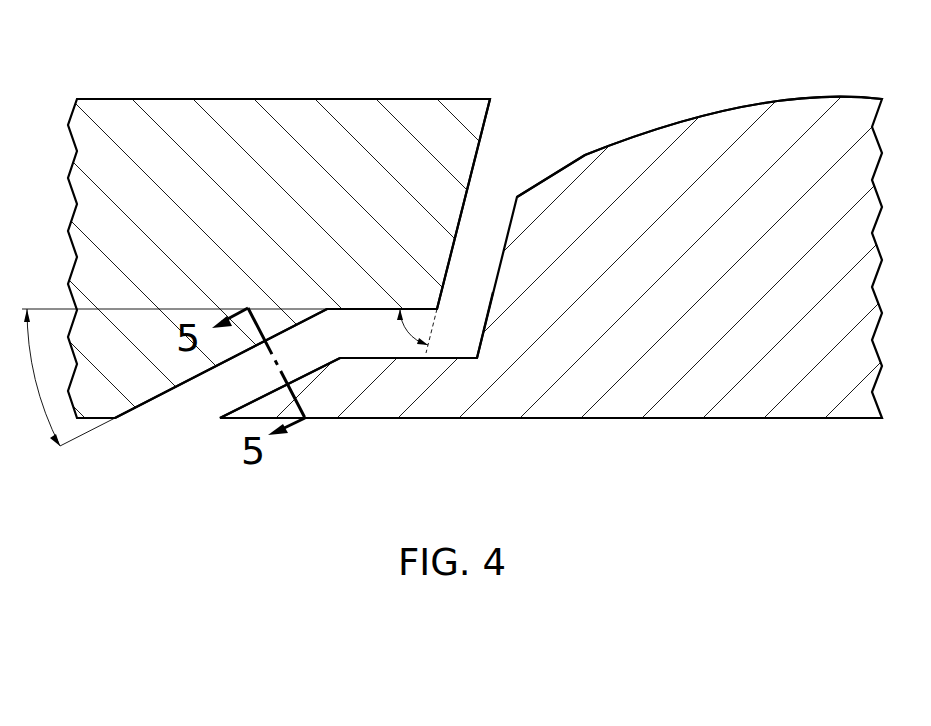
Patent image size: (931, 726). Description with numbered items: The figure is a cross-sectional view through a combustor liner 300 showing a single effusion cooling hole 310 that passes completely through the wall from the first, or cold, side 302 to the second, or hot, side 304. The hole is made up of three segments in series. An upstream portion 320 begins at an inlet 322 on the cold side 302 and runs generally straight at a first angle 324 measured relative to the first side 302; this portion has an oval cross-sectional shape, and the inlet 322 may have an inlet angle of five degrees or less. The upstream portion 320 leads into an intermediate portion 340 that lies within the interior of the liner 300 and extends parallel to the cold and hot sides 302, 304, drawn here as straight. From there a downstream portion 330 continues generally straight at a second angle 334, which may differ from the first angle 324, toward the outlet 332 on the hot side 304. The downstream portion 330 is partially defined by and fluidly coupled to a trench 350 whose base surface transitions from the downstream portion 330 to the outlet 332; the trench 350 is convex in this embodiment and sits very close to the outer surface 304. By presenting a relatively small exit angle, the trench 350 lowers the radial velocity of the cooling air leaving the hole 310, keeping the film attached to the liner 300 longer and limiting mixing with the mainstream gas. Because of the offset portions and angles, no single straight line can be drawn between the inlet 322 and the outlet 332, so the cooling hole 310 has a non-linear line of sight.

The liner 300 is at (165, 112).
The first side 302 is at (427, 419).
The second side 304 is at (330, 99).
The effusion cooling hole 310 is at (520, 103).
The upstream portion 320 is at (138, 396).
The inlet 322 is at (185, 403).
The first angle 324 is at (223, 377).
The downstream portion 330 is at (474, 163).
The outlet 332 is at (615, 113).
The second angle 334 is at (403, 333).
The intermediate portion 340 is at (455, 360).
The trench 350 is at (590, 153).